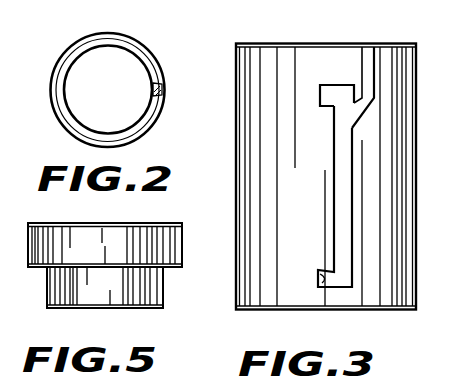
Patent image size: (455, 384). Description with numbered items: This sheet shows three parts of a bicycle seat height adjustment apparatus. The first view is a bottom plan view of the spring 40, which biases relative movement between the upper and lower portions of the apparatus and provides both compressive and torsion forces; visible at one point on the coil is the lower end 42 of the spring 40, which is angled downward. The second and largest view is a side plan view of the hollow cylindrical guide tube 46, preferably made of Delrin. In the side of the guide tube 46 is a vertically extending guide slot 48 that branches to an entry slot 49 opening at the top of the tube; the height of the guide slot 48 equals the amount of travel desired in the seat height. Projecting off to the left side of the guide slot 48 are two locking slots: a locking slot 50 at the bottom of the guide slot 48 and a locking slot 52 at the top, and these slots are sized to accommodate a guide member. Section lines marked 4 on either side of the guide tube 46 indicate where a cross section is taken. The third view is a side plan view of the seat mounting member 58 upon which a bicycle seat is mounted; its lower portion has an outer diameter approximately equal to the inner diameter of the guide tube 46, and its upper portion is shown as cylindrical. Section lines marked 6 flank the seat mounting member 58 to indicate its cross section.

In FIG. 2, the spring 40 is at (45, 86).
In FIG. 2, the lower end 42 is at (162, 84).
In FIG. 3, the guide tube 46 is at (421, 261).
In FIG. 3, the guide slot 48 is at (343, 203).
In FIG. 3, the entry slot 49 is at (376, 100).
In FIG. 3, the locking slot 50 is at (318, 273).
In FIG. 3, the locking slot 52 is at (343, 68).
In FIG. 5, the seat mounting member 58 is at (113, 315).
In FIG. 3, the section line 4- 4 is at (220, 88).
In FIG. 5, the section line 6- 6 is at (29, 318).